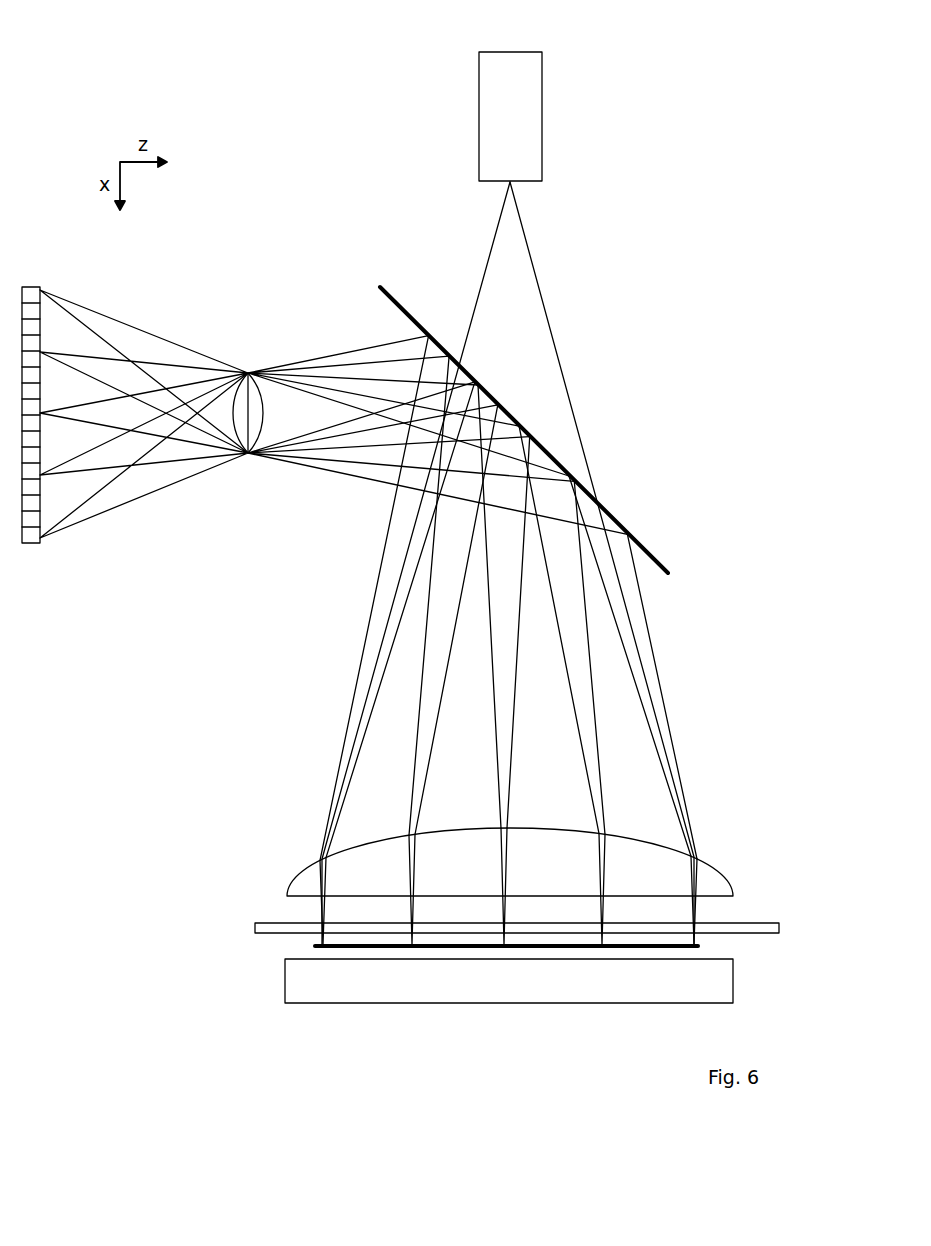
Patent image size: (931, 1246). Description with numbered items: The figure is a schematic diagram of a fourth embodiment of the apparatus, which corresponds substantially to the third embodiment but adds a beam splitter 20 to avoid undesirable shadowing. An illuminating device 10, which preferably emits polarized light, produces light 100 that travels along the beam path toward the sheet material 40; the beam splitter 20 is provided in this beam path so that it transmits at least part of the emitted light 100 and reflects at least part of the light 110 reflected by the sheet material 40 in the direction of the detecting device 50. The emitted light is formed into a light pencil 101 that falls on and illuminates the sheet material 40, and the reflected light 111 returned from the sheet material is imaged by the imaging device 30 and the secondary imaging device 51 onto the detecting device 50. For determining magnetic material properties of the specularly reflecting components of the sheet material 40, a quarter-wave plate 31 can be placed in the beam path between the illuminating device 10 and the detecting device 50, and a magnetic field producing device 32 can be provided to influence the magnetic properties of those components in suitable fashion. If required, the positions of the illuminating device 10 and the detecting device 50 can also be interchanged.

The illuminating device 10 is at (503, 98).
The beam splitter 20 is at (593, 488).
The imaging device 30 is at (308, 882).
The quarter-wave plate 31 is at (778, 929).
The magnetic field producing device 32 is at (707, 992).
The sheet material 40 is at (315, 948).
The detecting device 50 is at (26, 546).
The secondary imaging device 51 is at (240, 428).
The light 100 is at (547, 303).
The light pencil 101 is at (322, 917).
The reflected light 110 is at (128, 318).
The reflected light 111 is at (693, 867).